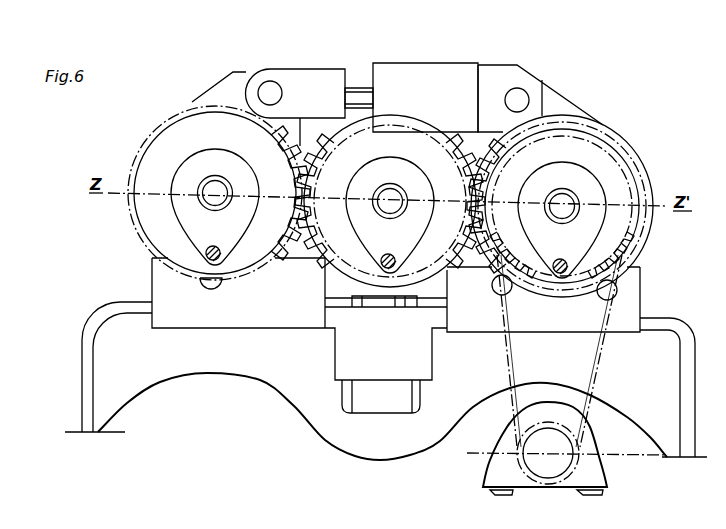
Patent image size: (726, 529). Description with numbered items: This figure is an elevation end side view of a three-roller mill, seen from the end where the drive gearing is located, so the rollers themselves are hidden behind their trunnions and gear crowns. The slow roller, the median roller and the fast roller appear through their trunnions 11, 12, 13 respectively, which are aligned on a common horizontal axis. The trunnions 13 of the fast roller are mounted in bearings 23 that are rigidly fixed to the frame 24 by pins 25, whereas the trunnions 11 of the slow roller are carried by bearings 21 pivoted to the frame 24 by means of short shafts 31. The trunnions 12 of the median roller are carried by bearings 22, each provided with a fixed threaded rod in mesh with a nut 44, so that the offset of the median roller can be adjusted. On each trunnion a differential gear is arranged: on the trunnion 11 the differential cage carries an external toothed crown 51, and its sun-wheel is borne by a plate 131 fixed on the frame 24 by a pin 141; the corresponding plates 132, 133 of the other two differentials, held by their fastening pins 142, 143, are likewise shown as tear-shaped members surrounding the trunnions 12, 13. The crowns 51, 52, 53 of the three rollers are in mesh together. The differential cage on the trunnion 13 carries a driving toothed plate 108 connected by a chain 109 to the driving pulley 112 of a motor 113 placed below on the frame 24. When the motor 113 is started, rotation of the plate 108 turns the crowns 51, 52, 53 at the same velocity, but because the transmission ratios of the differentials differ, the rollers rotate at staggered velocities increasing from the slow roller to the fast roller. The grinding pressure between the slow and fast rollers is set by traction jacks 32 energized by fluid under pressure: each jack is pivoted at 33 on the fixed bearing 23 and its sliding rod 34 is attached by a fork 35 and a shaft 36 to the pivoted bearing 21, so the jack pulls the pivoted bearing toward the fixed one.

The trunnion 11 is at (200, 188).
The trunnion 12 is at (391, 197).
The trunnion 13 is at (563, 198).
The bearing 21 is at (223, 92).
The bearing 22 is at (335, 287).
The bearing 23 is at (562, 100).
The frame 24 is at (235, 350).
The pin 25 is at (492, 287).
The short shaft 31 is at (211, 286).
The traction jack 32 is at (422, 85).
The pivot 33 is at (520, 97).
The sliding rod 34 is at (348, 93).
The fork 35 is at (279, 82).
The shaft 36 is at (269, 90).
The nut 44 is at (393, 397).
The external toothed crown 51 is at (140, 147).
The toothed crown 52 is at (323, 160).
The toothed crown 53 is at (595, 123).
The driving toothed plate 108 is at (603, 145).
The chain 109 is at (603, 367).
The driving pulley 112 is at (570, 435).
The motor 113 is at (588, 467).
The plate 131 is at (200, 228).
The plate 132 is at (387, 237).
The plate 133 is at (592, 225).
The pin 141 is at (205, 257).
The fastening pin 142 is at (383, 258).
The fastening pin 143 is at (561, 259).